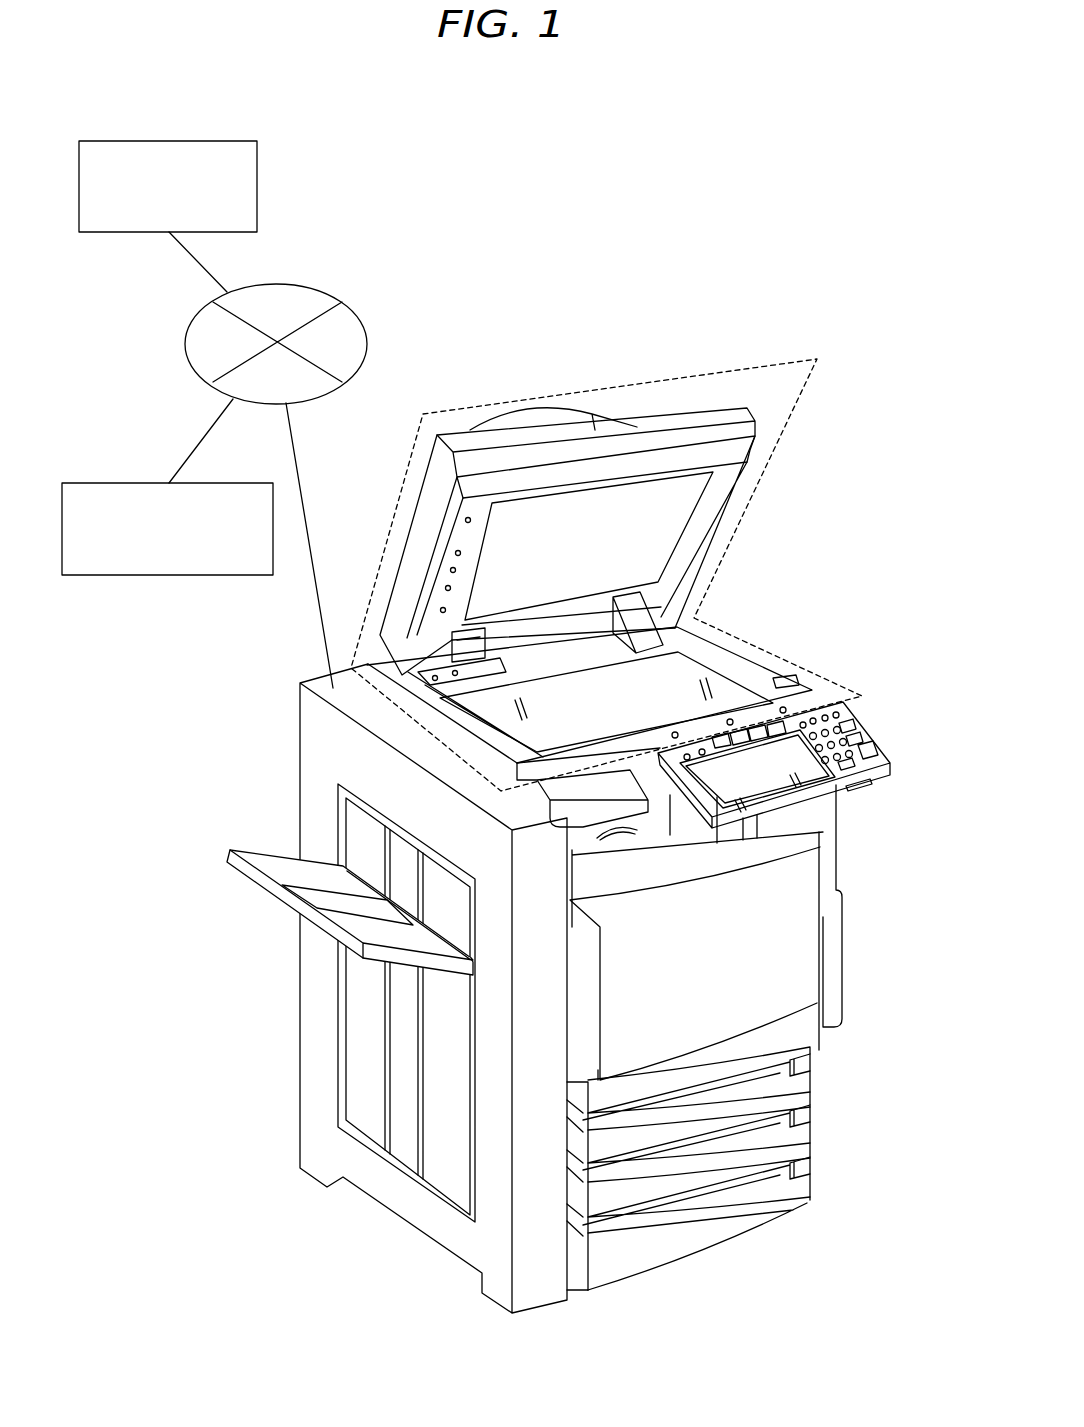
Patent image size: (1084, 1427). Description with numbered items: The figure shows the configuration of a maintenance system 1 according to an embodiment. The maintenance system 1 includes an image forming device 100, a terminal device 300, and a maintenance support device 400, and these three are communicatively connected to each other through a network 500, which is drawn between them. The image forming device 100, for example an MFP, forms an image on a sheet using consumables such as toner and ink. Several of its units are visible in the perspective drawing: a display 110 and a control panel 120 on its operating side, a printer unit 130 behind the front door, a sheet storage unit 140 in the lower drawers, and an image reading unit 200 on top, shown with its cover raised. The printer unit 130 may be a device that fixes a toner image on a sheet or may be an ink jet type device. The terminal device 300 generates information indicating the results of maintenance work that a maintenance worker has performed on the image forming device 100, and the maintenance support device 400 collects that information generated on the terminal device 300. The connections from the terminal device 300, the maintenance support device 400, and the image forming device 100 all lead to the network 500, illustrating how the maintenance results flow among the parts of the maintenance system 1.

The maintenance system 1 is at (371, 157).
The image forming device 100 is at (616, 301).
The display 110 is at (787, 753).
The control panel 120 is at (870, 745).
The printer unit 130 is at (795, 986).
The sheet storage unit 140 is at (823, 1037).
The image reading unit 200 is at (755, 355).
The terminal device 300 is at (189, 141).
The maintenance support device 400 is at (205, 483).
The network 500 is at (282, 285).